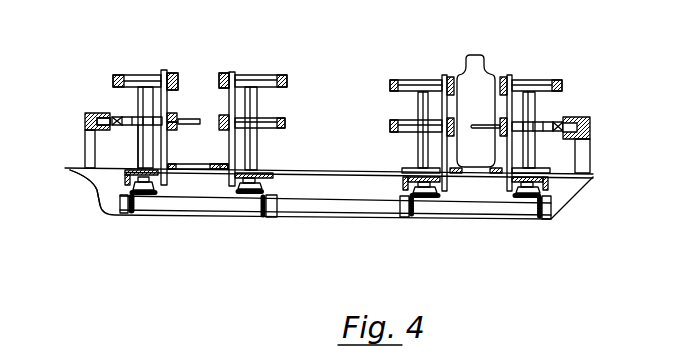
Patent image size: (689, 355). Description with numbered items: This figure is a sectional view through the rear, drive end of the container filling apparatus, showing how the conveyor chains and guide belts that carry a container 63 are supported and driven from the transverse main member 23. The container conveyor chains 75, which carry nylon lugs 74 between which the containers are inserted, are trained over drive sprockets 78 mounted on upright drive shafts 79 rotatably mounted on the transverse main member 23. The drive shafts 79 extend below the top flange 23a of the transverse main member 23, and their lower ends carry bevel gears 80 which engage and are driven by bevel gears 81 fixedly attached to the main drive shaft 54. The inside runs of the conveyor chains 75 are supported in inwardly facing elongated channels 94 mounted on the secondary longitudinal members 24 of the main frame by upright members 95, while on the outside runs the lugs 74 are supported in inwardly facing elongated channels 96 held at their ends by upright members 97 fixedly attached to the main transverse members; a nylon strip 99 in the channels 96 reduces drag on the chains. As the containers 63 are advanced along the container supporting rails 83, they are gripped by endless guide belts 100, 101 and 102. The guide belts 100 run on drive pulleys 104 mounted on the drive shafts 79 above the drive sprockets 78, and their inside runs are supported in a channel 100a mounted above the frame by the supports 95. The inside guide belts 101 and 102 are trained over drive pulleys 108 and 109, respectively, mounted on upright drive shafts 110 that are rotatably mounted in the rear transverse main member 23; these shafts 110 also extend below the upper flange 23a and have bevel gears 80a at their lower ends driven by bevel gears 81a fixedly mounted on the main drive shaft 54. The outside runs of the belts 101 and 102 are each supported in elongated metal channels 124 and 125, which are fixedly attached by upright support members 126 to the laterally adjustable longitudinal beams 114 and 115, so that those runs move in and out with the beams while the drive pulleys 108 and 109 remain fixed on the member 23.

The transverse main member 23 is at (343, 192).
The top flange 23a is at (330, 170).
The secondary longitudinal member 24 is at (125, 178).
The main drive shaft 54 is at (338, 205).
The container 63 is at (486, 103).
The nylon lug 74 is at (87, 113).
The container conveyor chain 75 is at (173, 130).
The drive sprocket 78 is at (137, 127).
The drive shaft 79 is at (138, 95).
The bevel gear 80 is at (147, 190).
The bevel gear 80a is at (254, 196).
The bevel gear 81 is at (126, 208).
The bevel gear 81a is at (267, 213).
The container supporting rail 83 is at (205, 169).
The elongated channel 94 is at (172, 113).
The upright member 95 is at (163, 97).
The elongated channel 96 is at (90, 112).
The upright member 97 is at (85, 148).
The nylon strip 99 is at (85, 120).
The guide belt 100 is at (178, 78).
The channel 100a is at (173, 72).
The guide belt 101 is at (229, 72).
The guide belt 102 is at (229, 126).
The drive pulley 104 is at (127, 77).
The drive pulley 108 is at (267, 75).
The drive pulley 109 is at (268, 122).
The drive shaft 110 is at (254, 147).
The longitudinal beam 114 is at (271, 177).
The longitudinal beam 115 is at (403, 186).
The elongated metal channel 124 is at (235, 74).
The elongated metal channel 125 is at (262, 106).
The upright support member 126 is at (227, 171).